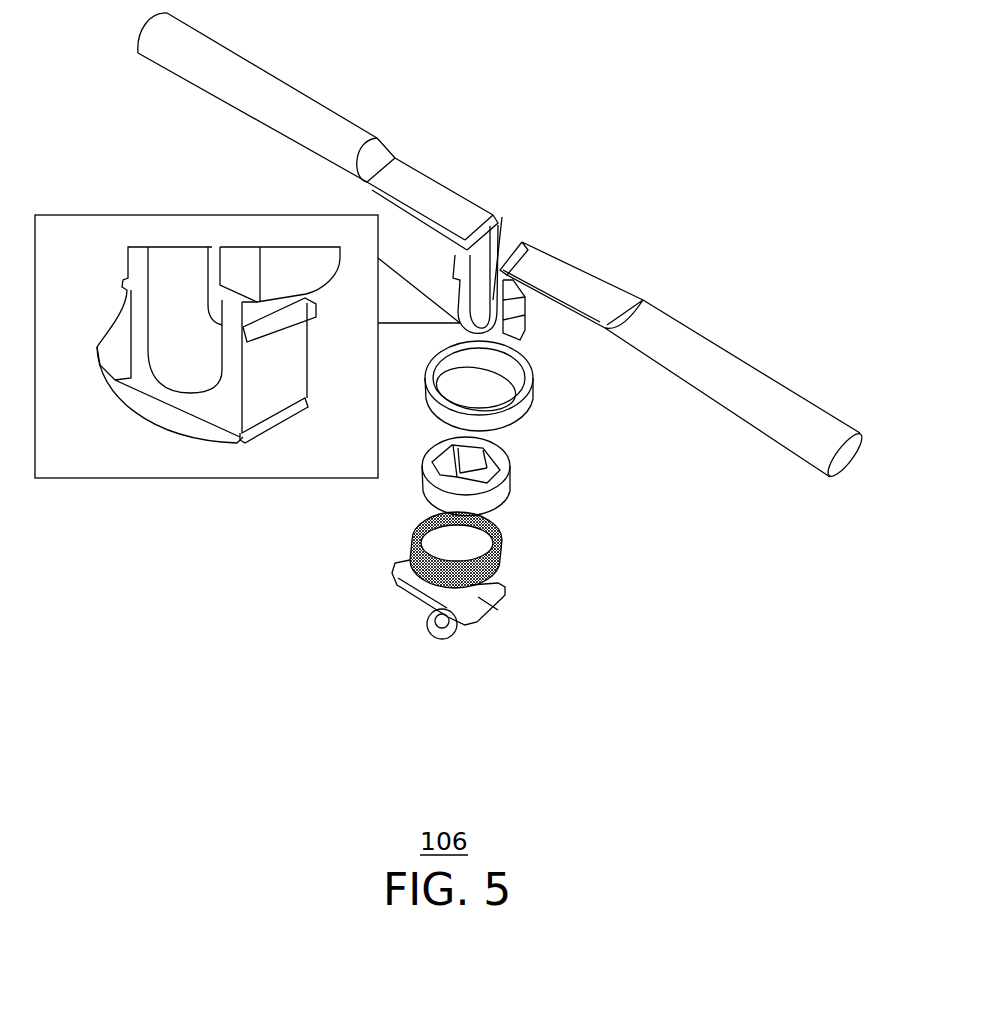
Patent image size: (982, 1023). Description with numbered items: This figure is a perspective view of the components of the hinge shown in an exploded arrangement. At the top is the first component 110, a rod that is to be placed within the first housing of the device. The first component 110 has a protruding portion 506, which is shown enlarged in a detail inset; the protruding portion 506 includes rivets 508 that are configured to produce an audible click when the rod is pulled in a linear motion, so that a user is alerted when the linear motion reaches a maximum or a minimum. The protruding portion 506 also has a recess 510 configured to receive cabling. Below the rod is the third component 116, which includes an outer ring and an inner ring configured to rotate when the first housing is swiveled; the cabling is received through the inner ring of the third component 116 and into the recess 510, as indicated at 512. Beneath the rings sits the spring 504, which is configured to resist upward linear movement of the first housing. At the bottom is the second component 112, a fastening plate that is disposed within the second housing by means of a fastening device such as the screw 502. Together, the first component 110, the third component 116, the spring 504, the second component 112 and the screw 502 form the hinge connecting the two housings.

The first component 110 is at (222, 67).
The protruding portion 506 is at (120, 215).
The rivets 508 is at (312, 305).
The recess 510 is at (498, 272).
The third component 116 is at (512, 492).
The cabling path through inner ring 512 is at (452, 470).
The spring 504 is at (503, 558).
The second component 112 is at (480, 598).
The screw 502 is at (443, 645).